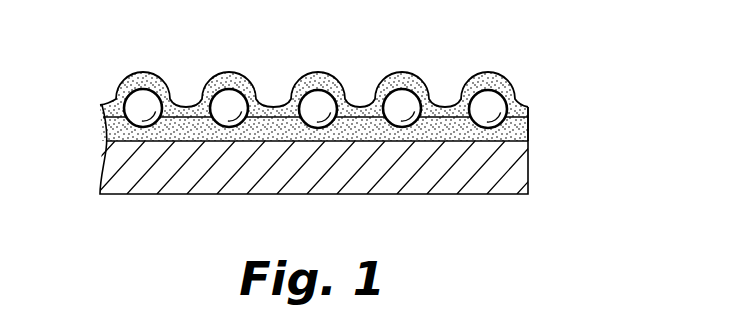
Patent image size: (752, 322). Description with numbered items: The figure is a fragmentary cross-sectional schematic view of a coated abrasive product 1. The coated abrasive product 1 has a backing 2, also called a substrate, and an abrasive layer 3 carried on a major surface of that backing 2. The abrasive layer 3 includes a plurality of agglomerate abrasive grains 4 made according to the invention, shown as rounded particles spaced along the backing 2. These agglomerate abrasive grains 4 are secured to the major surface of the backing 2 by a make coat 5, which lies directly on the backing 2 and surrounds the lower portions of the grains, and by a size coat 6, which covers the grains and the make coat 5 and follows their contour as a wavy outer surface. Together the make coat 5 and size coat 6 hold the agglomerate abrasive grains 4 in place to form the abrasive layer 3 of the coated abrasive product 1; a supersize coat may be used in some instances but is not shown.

The coated abrasive product 1 is at (418, 42).
The backing 2 is at (191, 180).
The abrasive layer 3 is at (541, 122).
The agglomerate abrasive grains 4 is at (318, 98).
The make coat 5 is at (100, 127).
The size coat 6 is at (130, 82).